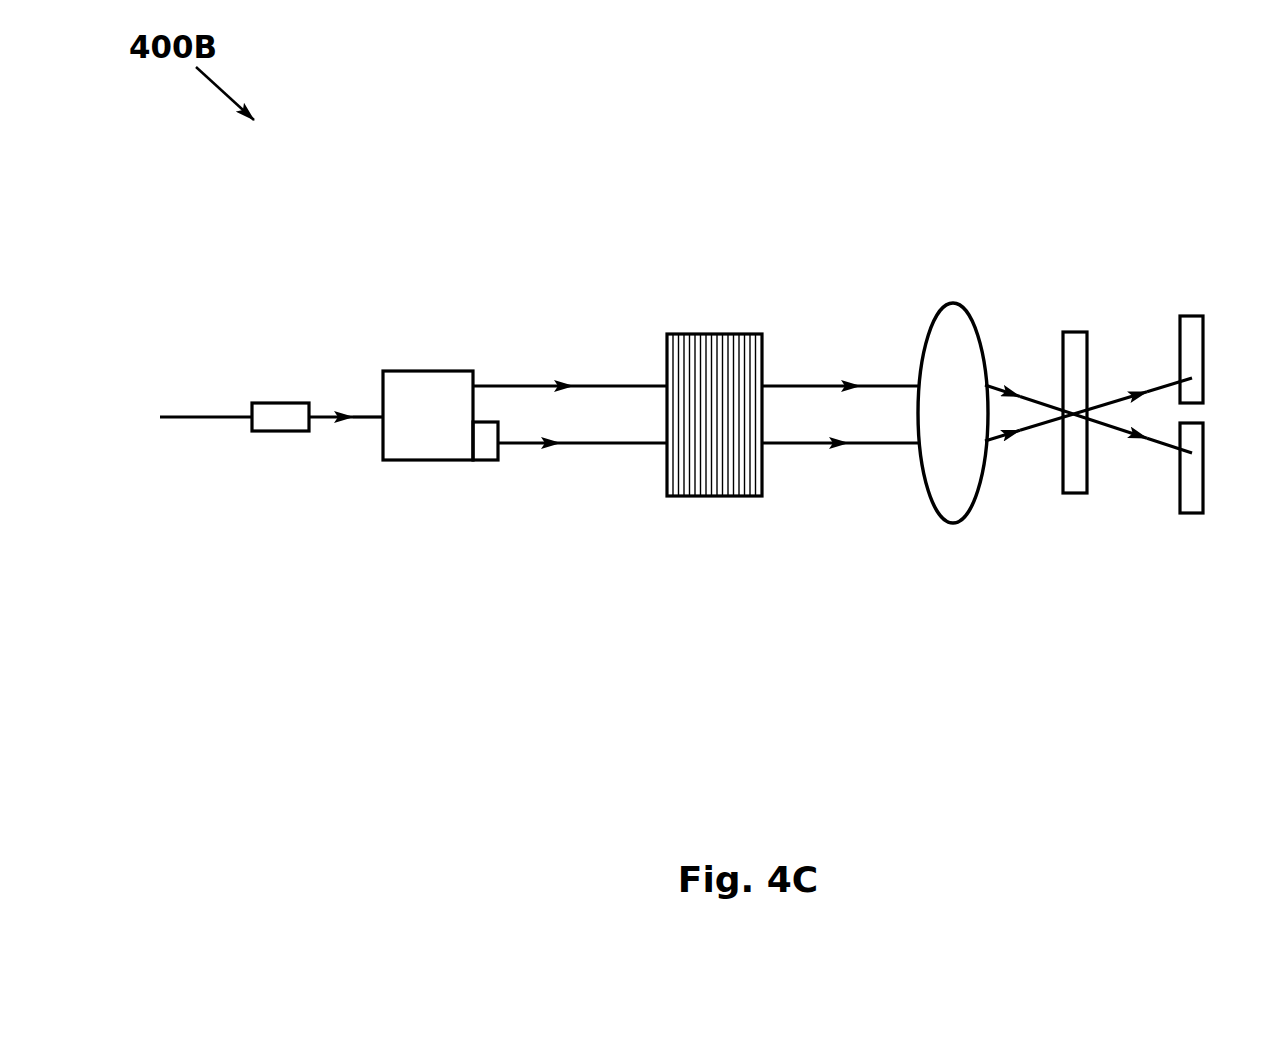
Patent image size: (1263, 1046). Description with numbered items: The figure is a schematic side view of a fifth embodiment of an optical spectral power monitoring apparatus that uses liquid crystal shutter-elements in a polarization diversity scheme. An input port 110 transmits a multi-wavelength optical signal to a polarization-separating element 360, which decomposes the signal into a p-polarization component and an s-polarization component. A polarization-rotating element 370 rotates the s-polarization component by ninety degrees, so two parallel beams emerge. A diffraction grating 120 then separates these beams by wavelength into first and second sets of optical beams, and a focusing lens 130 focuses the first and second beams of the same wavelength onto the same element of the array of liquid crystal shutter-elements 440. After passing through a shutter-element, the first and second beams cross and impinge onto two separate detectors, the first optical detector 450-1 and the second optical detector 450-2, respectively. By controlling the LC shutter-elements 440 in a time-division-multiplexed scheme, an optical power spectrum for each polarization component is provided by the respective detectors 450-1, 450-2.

The input port 110 is at (284, 403).
The polarization-separating element 360 is at (437, 371).
The polarization-rotating element 370 is at (483, 460).
The diffraction grating 120 is at (706, 334).
The focusing lens 130 is at (950, 302).
The array of liquid crystal shutter-elements 440 is at (1078, 332).
The first optical detector 450-1 is at (1193, 316).
The second optical detector 450-2 is at (1186, 513).